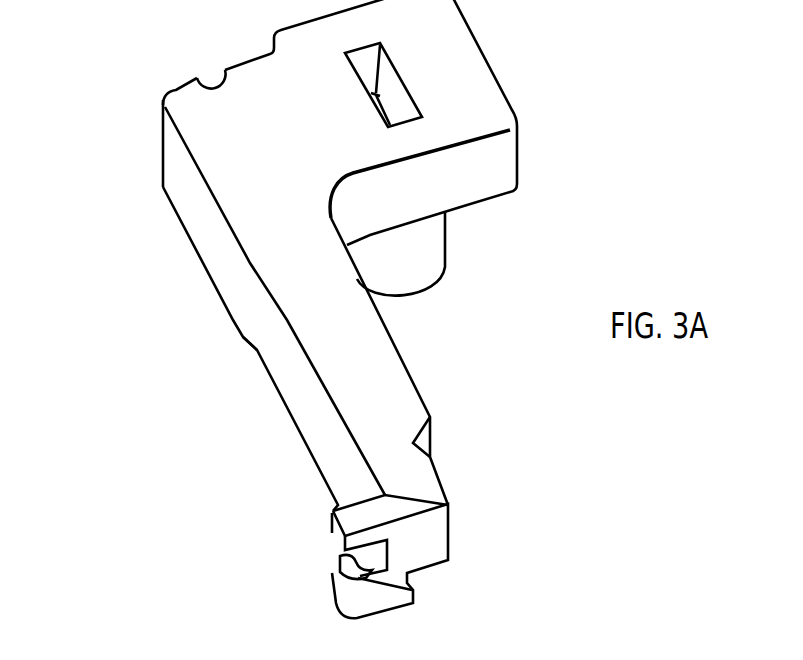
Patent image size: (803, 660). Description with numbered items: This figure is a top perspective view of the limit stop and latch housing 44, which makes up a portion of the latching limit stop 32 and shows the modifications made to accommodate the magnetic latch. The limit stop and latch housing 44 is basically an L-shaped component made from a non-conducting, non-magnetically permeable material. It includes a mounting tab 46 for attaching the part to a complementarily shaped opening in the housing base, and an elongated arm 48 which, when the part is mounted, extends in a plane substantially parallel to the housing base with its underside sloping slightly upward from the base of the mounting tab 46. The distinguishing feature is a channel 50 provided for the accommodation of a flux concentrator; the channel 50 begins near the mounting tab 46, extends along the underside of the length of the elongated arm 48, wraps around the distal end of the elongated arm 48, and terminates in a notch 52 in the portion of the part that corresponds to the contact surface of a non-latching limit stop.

The latching limit stop 32 is at (517, 41).
The limit stop and latch housing 44 is at (126, 263).
The mounting tab 46 is at (430, 252).
The elongated arm 48 is at (273, 385).
The channel 50 is at (212, 80).
The notch 52 is at (330, 563).